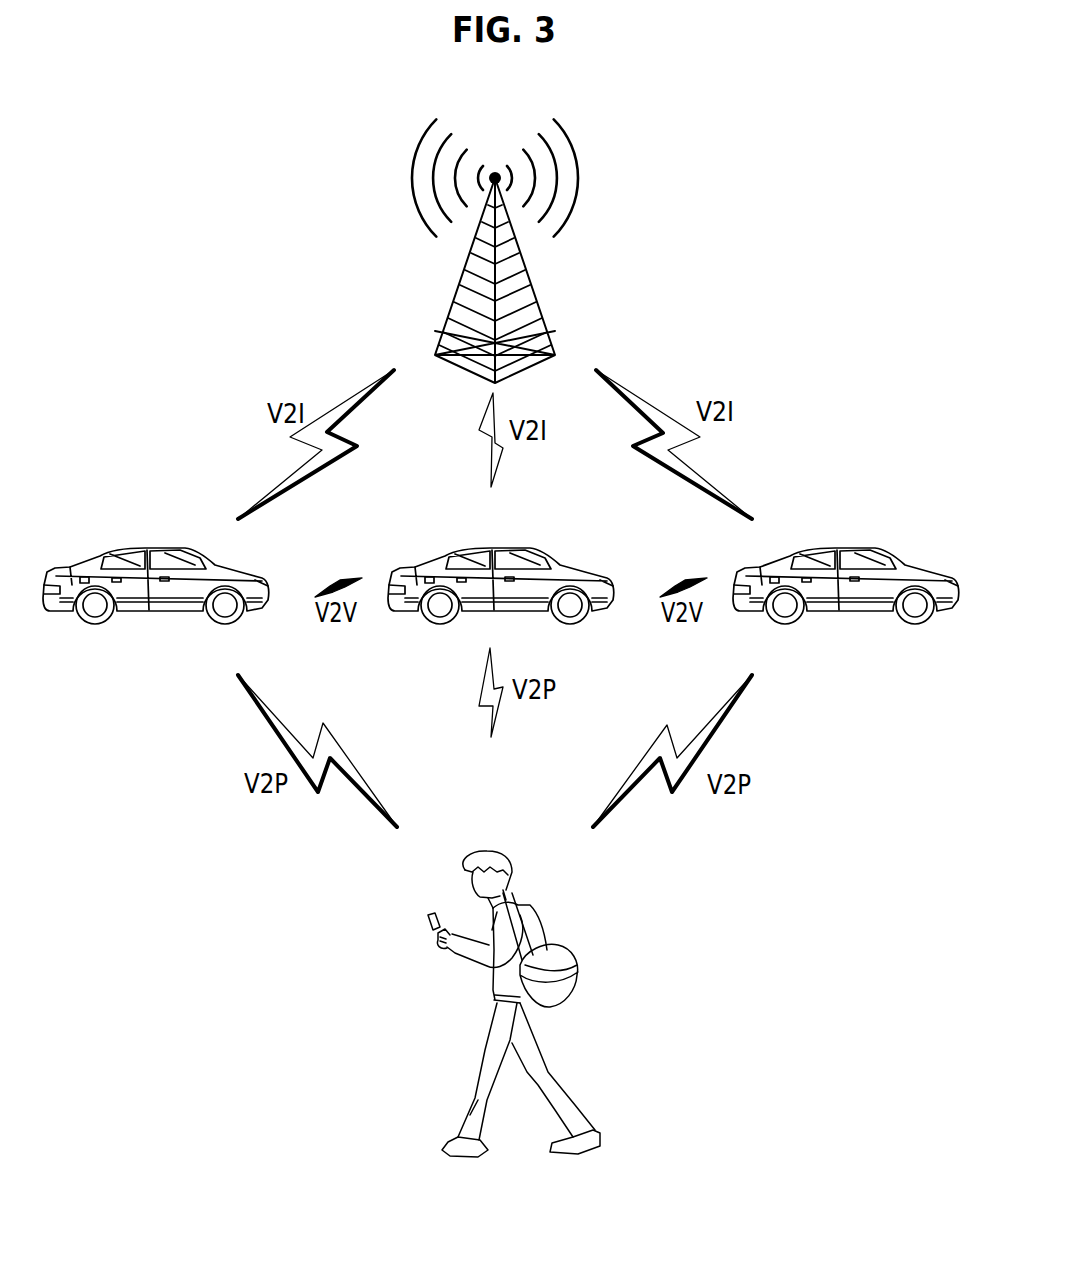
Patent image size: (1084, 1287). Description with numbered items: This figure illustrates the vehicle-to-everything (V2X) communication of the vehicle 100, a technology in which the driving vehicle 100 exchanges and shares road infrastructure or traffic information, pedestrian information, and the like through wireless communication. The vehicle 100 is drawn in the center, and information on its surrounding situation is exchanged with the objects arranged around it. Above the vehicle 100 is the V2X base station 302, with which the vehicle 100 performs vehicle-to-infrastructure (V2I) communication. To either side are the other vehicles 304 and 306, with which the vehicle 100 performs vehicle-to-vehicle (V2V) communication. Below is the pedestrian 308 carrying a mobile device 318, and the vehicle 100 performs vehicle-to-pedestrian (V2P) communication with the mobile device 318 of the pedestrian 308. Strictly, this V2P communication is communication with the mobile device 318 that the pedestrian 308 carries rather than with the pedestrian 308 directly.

The V2X base station 302 is at (530, 285).
The other vehicle 304 is at (138, 548).
The vehicle 100 is at (487, 548).
The other vehicle 306 is at (831, 548).
The pedestrian 308 is at (486, 852).
The mobile device 318 is at (432, 913).